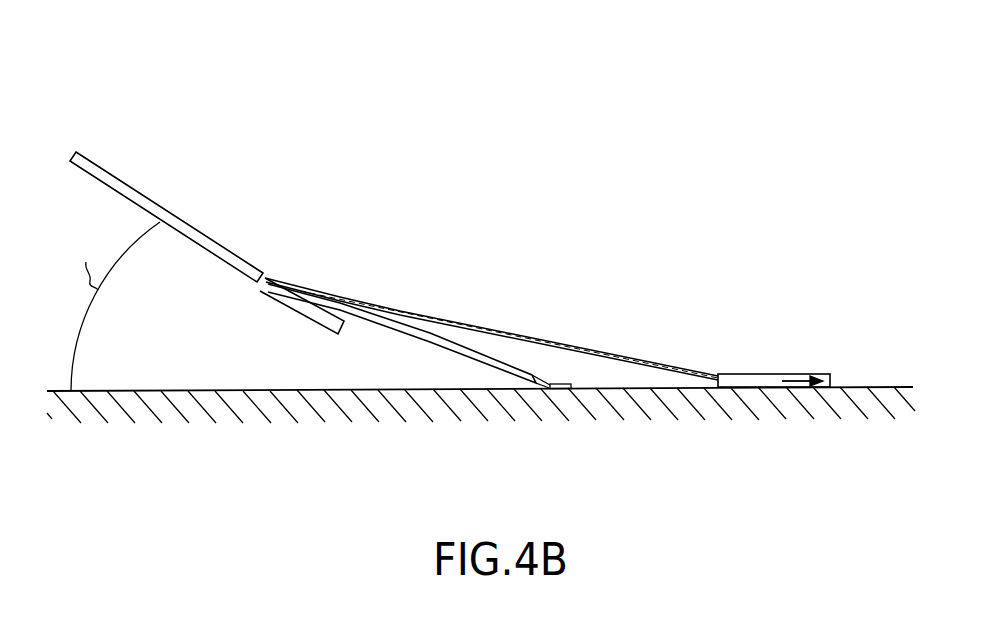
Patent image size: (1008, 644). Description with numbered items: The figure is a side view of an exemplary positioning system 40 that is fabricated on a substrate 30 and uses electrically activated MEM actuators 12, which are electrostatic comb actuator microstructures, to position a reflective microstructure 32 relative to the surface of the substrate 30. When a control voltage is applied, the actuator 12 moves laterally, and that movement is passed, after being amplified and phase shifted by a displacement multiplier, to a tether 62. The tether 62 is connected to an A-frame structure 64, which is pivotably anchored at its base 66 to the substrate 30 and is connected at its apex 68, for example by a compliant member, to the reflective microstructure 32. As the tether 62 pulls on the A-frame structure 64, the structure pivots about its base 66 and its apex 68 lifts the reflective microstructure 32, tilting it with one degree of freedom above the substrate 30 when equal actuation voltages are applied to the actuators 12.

The positioning system 40 is at (480, 55).
The MEM actuator 12 is at (793, 373).
The substrate 30 is at (855, 388).
The reflective microstructure 32 is at (140, 190).
The tether 62 is at (557, 345).
The A-frame structure 64 is at (452, 342).
The base 66 is at (572, 391).
The apex 68 is at (265, 288).